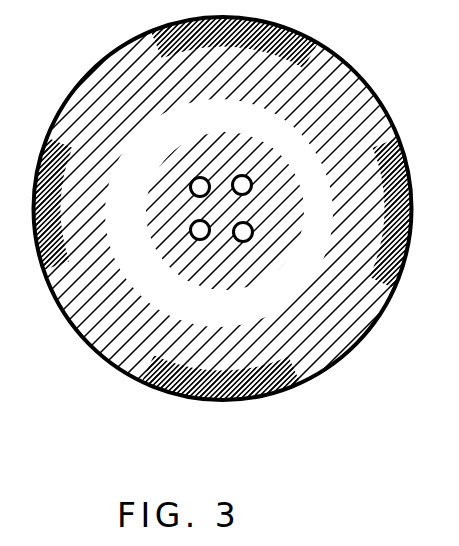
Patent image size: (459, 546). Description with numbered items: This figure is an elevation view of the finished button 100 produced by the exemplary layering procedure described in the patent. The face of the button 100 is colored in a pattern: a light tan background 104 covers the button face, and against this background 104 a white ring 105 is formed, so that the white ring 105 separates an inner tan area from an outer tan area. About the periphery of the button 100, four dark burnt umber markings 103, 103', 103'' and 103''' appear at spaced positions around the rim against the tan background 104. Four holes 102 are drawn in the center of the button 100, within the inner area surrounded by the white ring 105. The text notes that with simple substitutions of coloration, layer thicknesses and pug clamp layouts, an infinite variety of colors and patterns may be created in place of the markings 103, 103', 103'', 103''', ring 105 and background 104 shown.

The finished button 100 is at (187, 478).
The thread holes 102 is at (244, 186).
The dark burnt umber periphery marking 103 is at (229, 217).
The dark burnt umber periphery marking 103' is at (229, 217).
The dark burnt umber periphery marking 103'' is at (229, 217).
The dark burnt umber periphery marking 103''' is at (229, 217).
The light tan background 104 is at (342, 100).
The white ring 105 is at (193, 143).